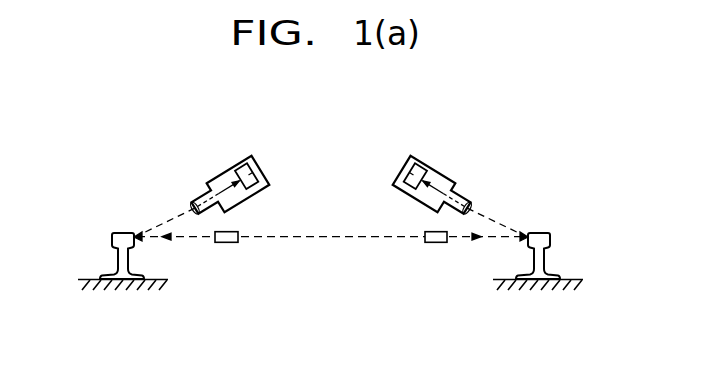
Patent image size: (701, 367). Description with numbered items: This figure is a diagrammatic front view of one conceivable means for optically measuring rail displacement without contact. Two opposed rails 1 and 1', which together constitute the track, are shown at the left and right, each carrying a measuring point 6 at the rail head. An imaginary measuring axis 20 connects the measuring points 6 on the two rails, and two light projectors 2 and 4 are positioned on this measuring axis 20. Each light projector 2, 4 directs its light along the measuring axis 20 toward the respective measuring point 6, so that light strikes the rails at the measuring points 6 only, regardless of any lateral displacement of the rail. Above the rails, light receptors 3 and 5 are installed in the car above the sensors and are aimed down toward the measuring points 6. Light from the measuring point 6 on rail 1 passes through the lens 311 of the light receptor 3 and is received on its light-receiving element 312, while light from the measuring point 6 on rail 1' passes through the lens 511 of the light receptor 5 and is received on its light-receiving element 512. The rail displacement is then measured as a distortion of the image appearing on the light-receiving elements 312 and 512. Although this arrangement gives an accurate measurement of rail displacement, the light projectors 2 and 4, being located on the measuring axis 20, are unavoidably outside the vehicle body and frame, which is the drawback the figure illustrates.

The rail 1 is at (118, 237).
The rail 1' is at (546, 236).
The light projector 2 is at (227, 243).
The light receptor 3 is at (240, 163).
The lens 311 is at (189, 202).
The light-receiving element 312 is at (262, 171).
The light projector 4 is at (436, 243).
The light receptor 5 is at (404, 164).
The lens 511 is at (474, 201).
The light-receiving element 512 is at (418, 161).
The measuring point 6 is at (137, 238).
The measuring axis 20 is at (327, 238).